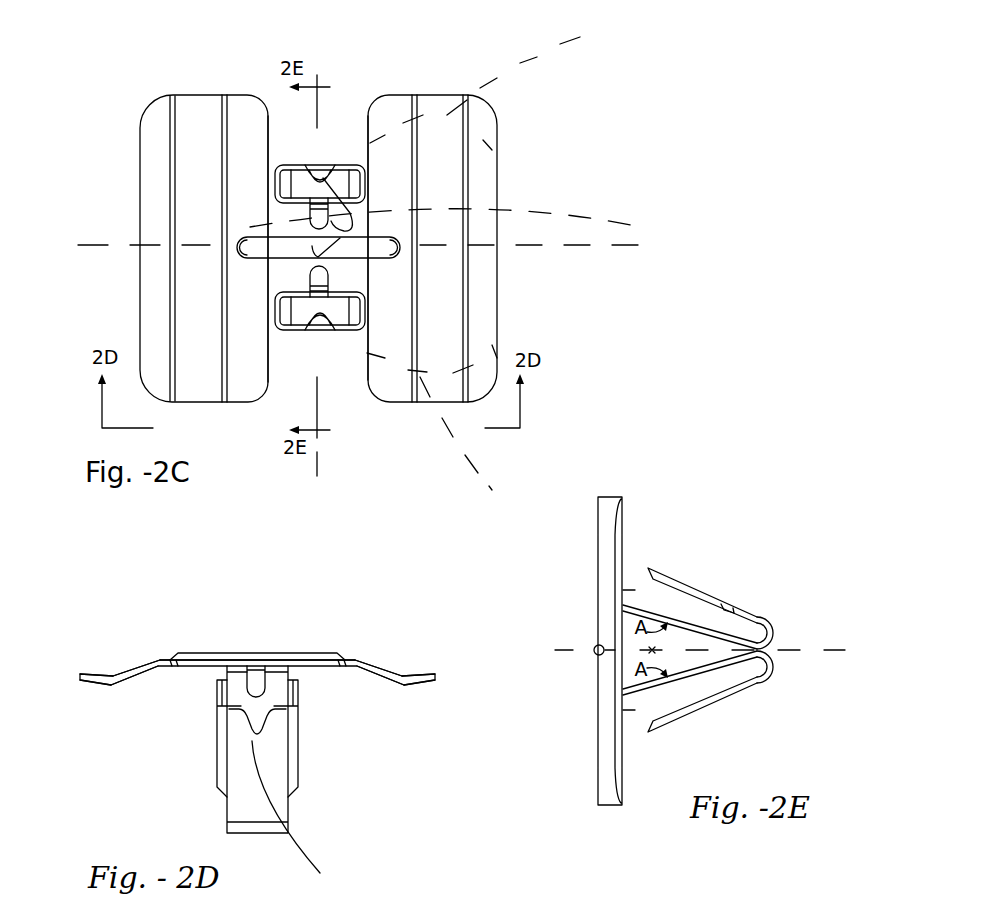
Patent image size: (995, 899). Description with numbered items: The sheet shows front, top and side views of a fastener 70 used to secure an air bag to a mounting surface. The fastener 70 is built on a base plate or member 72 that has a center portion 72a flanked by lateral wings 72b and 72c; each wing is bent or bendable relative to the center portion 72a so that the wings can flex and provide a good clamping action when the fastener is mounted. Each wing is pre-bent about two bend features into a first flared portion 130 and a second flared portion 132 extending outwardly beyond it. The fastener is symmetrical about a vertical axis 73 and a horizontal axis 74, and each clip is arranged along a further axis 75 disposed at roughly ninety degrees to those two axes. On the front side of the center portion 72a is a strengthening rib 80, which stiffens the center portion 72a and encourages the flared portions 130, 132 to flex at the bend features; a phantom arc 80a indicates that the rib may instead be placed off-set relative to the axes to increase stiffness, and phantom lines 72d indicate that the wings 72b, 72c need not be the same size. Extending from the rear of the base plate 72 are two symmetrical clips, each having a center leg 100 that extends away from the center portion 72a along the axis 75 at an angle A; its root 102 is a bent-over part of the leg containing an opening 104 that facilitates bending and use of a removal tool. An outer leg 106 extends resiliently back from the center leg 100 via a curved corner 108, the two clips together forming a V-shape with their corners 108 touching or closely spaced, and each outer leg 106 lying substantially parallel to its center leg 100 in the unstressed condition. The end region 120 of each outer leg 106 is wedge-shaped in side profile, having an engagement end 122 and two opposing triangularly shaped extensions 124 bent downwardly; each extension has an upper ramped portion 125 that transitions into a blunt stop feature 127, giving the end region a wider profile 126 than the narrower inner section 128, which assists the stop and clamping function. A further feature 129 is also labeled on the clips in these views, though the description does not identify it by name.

In FIG. 2E, the fastener 70 is at (629, 505).
In FIG. 2C, the base plate or member 72 is at (342, 259).
In FIG. 2D, the base plate or member 72 is at (251, 674).
In FIG. 2C, the center portion 72a is at (280, 223).
In FIG. 2C, the lateral wing or section 72b is at (480, 120).
In FIG. 2D, the lateral wing or section 72b is at (126, 684).
In FIG. 2C, the lateral wing or section 72c is at (155, 130).
In FIG. 2D, the lateral wing or section 72c is at (380, 684).
In FIG. 2C, the phantom lines 72d is at (499, 136).
In FIG. 2C, the centerline or vertical axis 73 is at (318, 463).
In FIG. 2C, the horizontal axis 74 is at (86, 245).
In FIG. 2E, the axis 75 is at (571, 648).
In FIG. 2C, the strengthening rib 80 is at (368, 248).
In FIG. 2D, the strengthening rib 80 is at (240, 658).
In FIG. 2E, the strengthening rib 80 is at (597, 654).
In FIG. 2C, the off-set rib 80a is at (464, 222).
In FIG. 2E, the center leg 100 is at (728, 590).
In FIG. 2D, the root or base region 102 is at (233, 664).
In FIG. 2C, the opening 104 is at (199, 232).
In FIG. 2D, the opening 104 is at (257, 677).
In FIG. 2D, the outer leg 106 is at (248, 815).
In FIG. 2E, the outer leg 106 is at (719, 590).
In FIG. 2E, the curved corner 108 is at (728, 590).
In FIG. 2E, the end region 120 is at (705, 590).
In FIG. 2C, the engagement surface or end 122 is at (318, 220).
In FIG. 2D, the triangularly shaped extension 124 is at (213, 740).
In FIG. 2E, the triangularly shaped extension 124 is at (708, 590).
In FIG. 2E, the upper ramped or wedge portion 125 is at (645, 578).
In FIG. 2E, the wider profile 126 is at (638, 586).
In FIG. 2E, the blunt end or stop feature 127 is at (705, 590).
In FIG. 2E, the inner or narrower section 128 is at (716, 593).
In FIG. 2C, the notch 129 is at (195, 232).
In FIG. 2D, the notch 129 is at (307, 814).
In FIG. 2D, the first bent or flared portion 130 is at (136, 665).
In FIG. 2D, the second bent or flared portion 132 is at (92, 672).